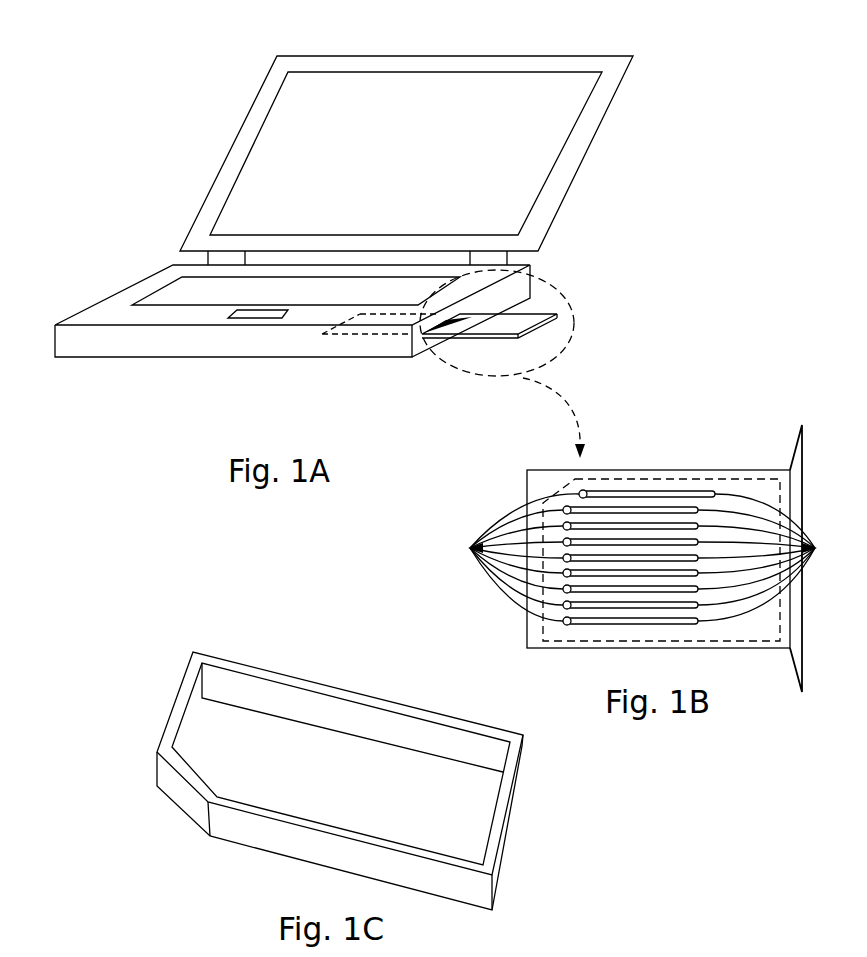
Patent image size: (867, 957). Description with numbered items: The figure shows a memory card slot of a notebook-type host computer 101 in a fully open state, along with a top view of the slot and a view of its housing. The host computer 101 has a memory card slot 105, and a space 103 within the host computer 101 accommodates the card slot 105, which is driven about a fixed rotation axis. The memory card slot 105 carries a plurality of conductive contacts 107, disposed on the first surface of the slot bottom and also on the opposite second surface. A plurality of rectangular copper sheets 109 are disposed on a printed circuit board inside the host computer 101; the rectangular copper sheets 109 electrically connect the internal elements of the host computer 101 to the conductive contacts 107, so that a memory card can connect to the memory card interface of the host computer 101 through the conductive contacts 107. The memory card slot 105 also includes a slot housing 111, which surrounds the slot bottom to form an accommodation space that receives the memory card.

In FIG. 1A, the host computer 101 is at (610, 30).
In FIG. 1A, the space 103 is at (372, 338).
In FIG. 1A, the memory card slot 105 is at (537, 327).
In FIG. 1B, the memory card slot 105 is at (757, 644).
In FIG. 1B, the conductive contacts 107 is at (506, 557).
In FIG. 1B, the rectangular copper sheets 109 is at (777, 557).
In FIG. 1C, the slot housing 111 is at (513, 820).